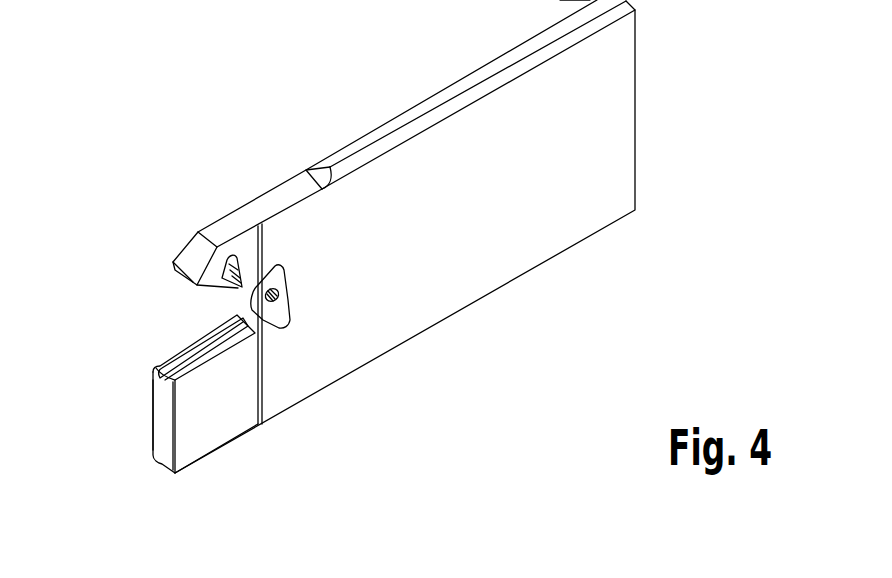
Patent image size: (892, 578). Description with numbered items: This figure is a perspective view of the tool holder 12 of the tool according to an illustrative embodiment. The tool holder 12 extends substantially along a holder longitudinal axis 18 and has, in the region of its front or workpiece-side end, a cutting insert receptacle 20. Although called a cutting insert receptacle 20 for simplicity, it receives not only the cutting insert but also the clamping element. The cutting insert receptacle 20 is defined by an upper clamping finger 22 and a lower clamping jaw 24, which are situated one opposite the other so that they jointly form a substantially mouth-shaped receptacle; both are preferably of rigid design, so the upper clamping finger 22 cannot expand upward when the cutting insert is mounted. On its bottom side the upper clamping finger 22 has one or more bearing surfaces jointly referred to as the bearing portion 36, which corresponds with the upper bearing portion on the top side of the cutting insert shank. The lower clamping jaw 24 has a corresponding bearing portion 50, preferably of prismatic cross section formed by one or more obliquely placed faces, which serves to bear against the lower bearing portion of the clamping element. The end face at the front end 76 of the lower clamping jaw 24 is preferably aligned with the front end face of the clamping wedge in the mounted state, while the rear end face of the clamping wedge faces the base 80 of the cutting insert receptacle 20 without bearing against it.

The tool holder 12 is at (150, 86).
The upper clamping finger 22 is at (232, 232).
The bearing portion 36 is at (188, 281).
The cutting insert receptacle 20 is at (176, 328).
The lower clamping jaw 24 is at (214, 430).
The bearing portion 50 is at (188, 348).
The front end 76 is at (160, 425).
The base 80 is at (287, 303).
The holder longitudinal axis 18 is at (405, 381).